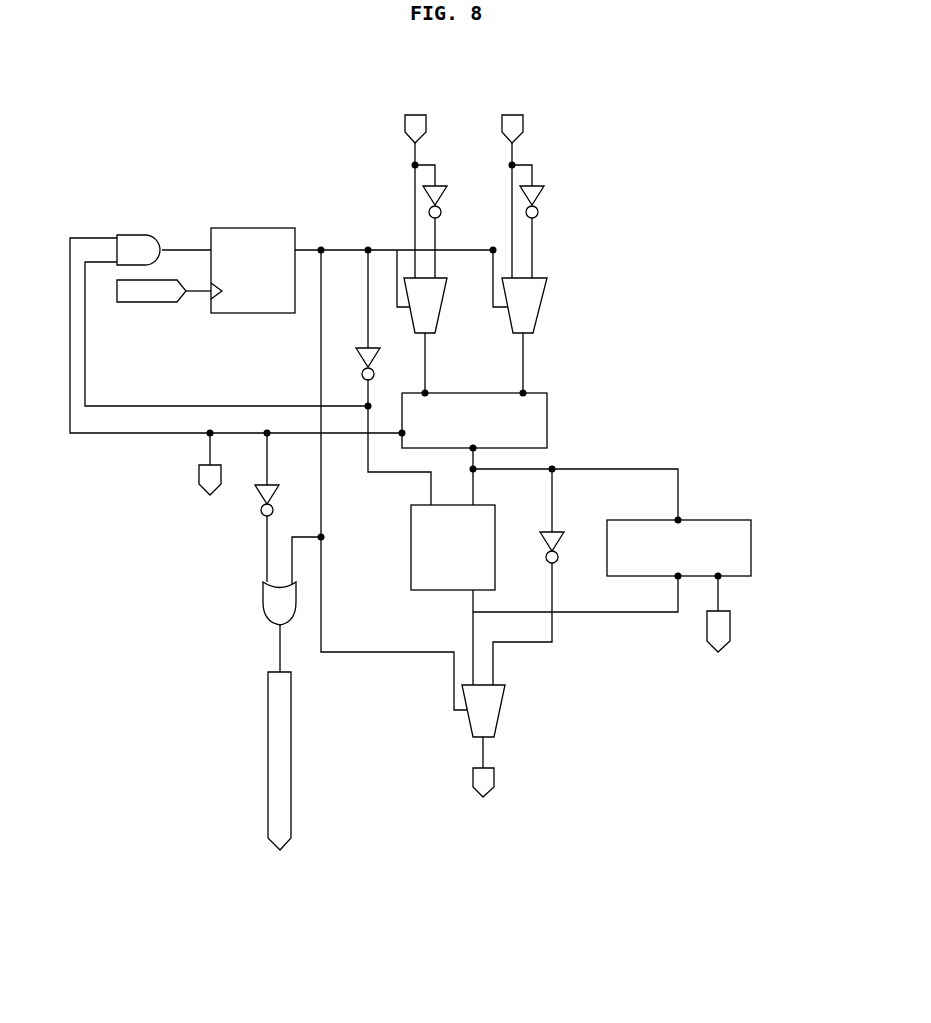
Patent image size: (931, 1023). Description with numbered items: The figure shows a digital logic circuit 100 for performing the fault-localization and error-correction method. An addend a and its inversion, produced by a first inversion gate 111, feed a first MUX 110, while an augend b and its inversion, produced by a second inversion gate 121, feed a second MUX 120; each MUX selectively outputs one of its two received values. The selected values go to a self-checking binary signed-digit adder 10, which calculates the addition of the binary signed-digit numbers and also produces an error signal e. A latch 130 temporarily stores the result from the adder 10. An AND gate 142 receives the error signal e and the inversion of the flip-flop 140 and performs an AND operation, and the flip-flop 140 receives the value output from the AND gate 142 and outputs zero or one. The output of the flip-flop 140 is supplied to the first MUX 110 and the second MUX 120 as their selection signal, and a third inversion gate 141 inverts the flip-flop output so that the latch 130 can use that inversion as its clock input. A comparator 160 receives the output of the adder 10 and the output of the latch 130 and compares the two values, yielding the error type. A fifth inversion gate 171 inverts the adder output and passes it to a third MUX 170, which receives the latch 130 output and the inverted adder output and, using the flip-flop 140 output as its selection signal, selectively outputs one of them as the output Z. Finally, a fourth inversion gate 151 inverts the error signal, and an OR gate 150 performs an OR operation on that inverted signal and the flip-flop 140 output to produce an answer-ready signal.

The digital logic circuit 100 is at (88, 83).
The AND gate 142 is at (128, 235).
The flip-flop 140 is at (250, 228).
The third inversion gate 141 is at (365, 346).
The first inversion gate 111 is at (437, 185).
The second inversion gate 121 is at (535, 185).
The first MUX 110 is at (440, 325).
The second MUX 120 is at (537, 325).
The self-checking binary signed-digit adder 10 is at (547, 420).
The latch 130 is at (411, 548).
The fifth inversion gate 171 is at (552, 530).
The comparator 160 is at (751, 548).
The fourth inversion gate 151 is at (260, 497).
The OR gate 150 is at (263, 587).
The third MUX 170 is at (505, 710).